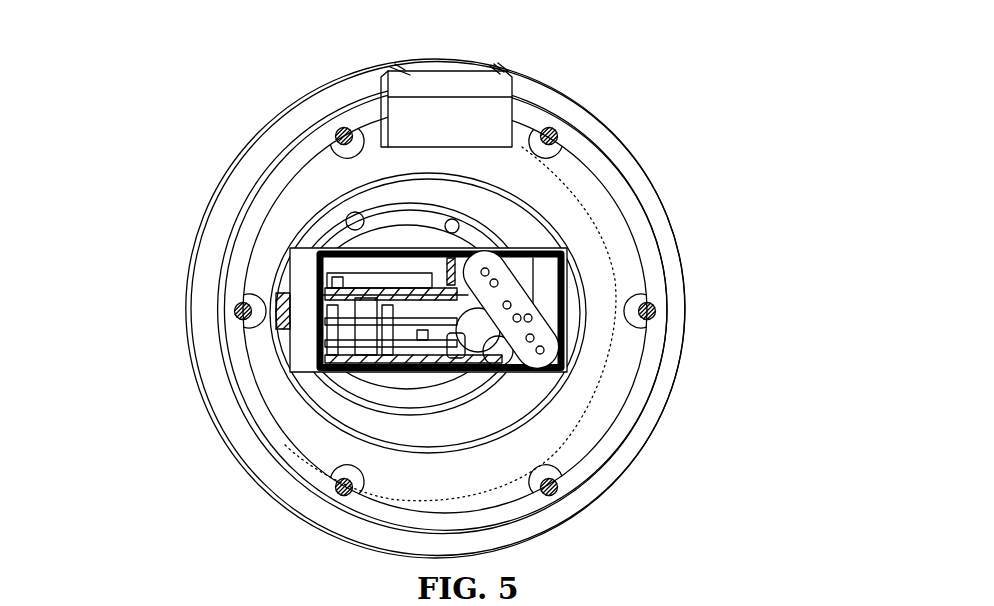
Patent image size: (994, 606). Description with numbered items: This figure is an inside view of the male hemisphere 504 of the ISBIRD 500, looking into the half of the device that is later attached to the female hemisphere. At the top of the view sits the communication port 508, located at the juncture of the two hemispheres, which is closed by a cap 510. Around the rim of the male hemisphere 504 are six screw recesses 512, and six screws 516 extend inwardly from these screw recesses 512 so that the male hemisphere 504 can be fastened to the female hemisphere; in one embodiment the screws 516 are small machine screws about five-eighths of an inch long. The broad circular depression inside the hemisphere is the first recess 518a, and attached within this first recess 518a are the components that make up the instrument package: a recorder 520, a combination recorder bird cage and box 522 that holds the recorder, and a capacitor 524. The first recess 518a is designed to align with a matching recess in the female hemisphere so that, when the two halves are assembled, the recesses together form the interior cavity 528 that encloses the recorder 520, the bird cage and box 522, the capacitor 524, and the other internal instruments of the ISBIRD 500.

The ISBIRD 500 is at (690, 237).
The male hemisphere 504 is at (688, 315).
The communication port 508 is at (465, 116).
The cap 510 is at (427, 83).
The screw recesses 512 is at (557, 133).
The screws 516 is at (560, 136).
The first recess 518a is at (608, 196).
The recorder 520 is at (342, 407).
The combination recorder bird cage and box 522 is at (291, 248).
The capacitor 524 is at (567, 337).
The interior cavity 528 is at (582, 403).